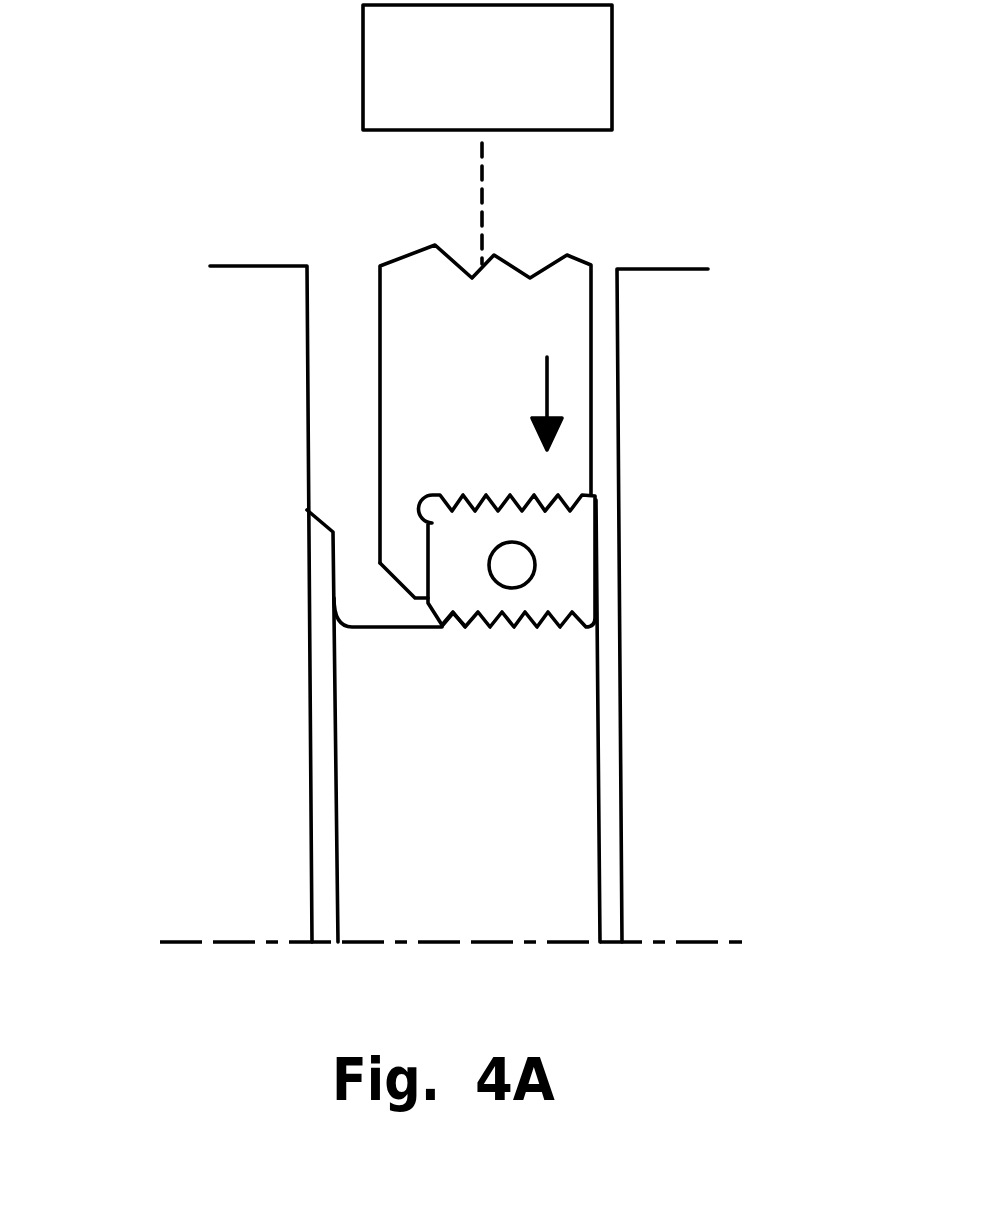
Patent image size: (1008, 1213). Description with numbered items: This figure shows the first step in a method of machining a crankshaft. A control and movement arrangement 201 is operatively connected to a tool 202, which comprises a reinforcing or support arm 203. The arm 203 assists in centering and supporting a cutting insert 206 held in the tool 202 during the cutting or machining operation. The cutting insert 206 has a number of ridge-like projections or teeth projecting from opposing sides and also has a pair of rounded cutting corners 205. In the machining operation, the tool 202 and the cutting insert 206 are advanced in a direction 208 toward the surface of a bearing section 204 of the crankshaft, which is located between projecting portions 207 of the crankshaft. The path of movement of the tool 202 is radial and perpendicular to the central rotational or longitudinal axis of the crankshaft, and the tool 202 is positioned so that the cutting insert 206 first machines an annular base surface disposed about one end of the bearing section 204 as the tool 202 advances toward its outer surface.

The control and movement arrangement 201 is at (575, 73).
The tool 202 is at (570, 300).
The reinforcing or support arm 203 is at (405, 557).
The bearing section 204 is at (565, 807).
The rounded cutting corners 205 is at (588, 617).
The cutting insert 206 is at (562, 538).
The projecting portions 207 is at (272, 325).
The direction 208 is at (512, 403).